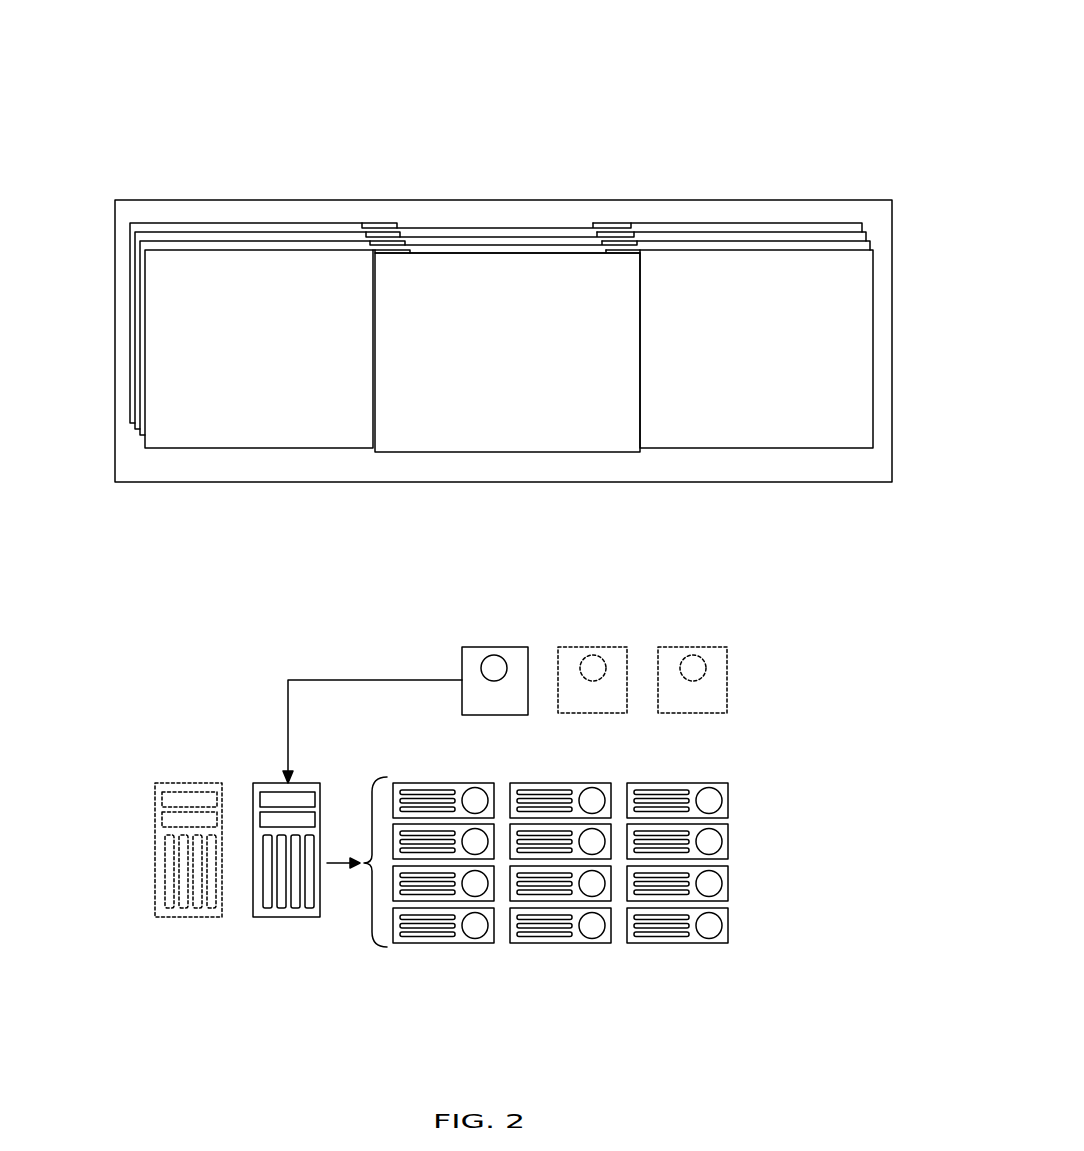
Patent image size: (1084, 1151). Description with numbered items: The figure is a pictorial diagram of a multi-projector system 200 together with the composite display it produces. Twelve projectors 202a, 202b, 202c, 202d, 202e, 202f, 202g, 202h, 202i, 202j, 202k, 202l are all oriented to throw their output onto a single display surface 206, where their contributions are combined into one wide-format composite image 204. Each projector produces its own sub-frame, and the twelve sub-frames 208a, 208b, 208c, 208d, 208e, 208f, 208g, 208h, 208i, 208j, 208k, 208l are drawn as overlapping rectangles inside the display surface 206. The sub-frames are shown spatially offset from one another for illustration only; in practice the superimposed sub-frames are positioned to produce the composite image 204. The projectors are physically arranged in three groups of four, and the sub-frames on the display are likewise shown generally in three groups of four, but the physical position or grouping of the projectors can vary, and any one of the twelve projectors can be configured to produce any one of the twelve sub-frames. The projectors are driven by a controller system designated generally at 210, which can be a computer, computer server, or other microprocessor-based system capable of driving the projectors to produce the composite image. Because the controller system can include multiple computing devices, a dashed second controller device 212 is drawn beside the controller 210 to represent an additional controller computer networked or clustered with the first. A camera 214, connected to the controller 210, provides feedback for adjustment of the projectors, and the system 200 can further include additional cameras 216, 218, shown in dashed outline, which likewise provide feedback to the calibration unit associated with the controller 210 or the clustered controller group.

The multi-projector system 200 is at (390, 78).
The projector 202a is at (410, 796).
The projector 202b is at (430, 853).
The projector 202c is at (430, 887).
The projector 202d is at (478, 940).
The projector 202e is at (527, 797).
The projector 202f is at (573, 834).
The projector 202g is at (532, 897).
The projector 202h is at (590, 940).
The projector 202i is at (725, 798).
The projector 202j is at (725, 840).
The projector 202k is at (725, 883).
The projector 202l is at (718, 940).
The composite image 204 is at (606, 212).
The display surface 206 is at (590, 470).
The sub-frame 208a is at (157, 228).
The sub-frame 208b is at (201, 237).
The sub-frame 208c is at (252, 245).
The sub-frame 208d is at (262, 437).
The sub-frame 208e is at (414, 233).
The sub-frame 208f is at (453, 240).
The sub-frame 208g is at (488, 248).
The sub-frame 208h is at (487, 425).
The sub-frame 208i is at (678, 233).
The sub-frame 208j is at (719, 240).
The sub-frame 208k is at (770, 248).
The sub-frame 208l is at (748, 425).
The controller 210 is at (275, 916).
The optional controller 212 is at (183, 793).
The camera 214 is at (520, 662).
The additional camera 216 is at (625, 660).
The additional camera 218 is at (718, 672).